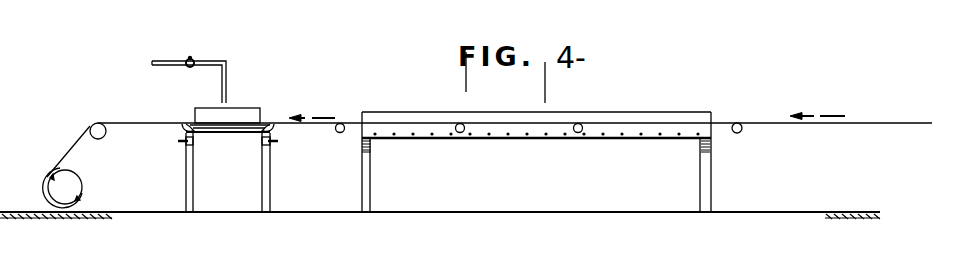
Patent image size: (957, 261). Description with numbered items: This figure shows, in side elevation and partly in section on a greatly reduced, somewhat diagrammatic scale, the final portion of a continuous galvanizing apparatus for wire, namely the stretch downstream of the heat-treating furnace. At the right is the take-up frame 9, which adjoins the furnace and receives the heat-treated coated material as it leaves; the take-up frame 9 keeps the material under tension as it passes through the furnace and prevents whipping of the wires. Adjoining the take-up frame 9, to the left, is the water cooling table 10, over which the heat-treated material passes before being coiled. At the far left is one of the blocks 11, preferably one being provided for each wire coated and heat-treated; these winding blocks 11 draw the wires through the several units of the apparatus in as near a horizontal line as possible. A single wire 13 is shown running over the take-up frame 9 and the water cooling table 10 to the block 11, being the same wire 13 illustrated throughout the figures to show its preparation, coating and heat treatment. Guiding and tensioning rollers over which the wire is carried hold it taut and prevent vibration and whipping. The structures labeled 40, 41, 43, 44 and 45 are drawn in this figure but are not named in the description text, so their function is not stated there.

The take-up frame 9 is at (558, 140).
The water cooling table 10 is at (268, 190).
The blocks 11 is at (80, 186).
The wire 13 is at (150, 124).
The rollers 40 is at (463, 125).
The hopper 41 is at (242, 108).
The sealing flaps 43 is at (188, 123).
The pins 44 is at (182, 143).
The pipe 45 is at (163, 62).